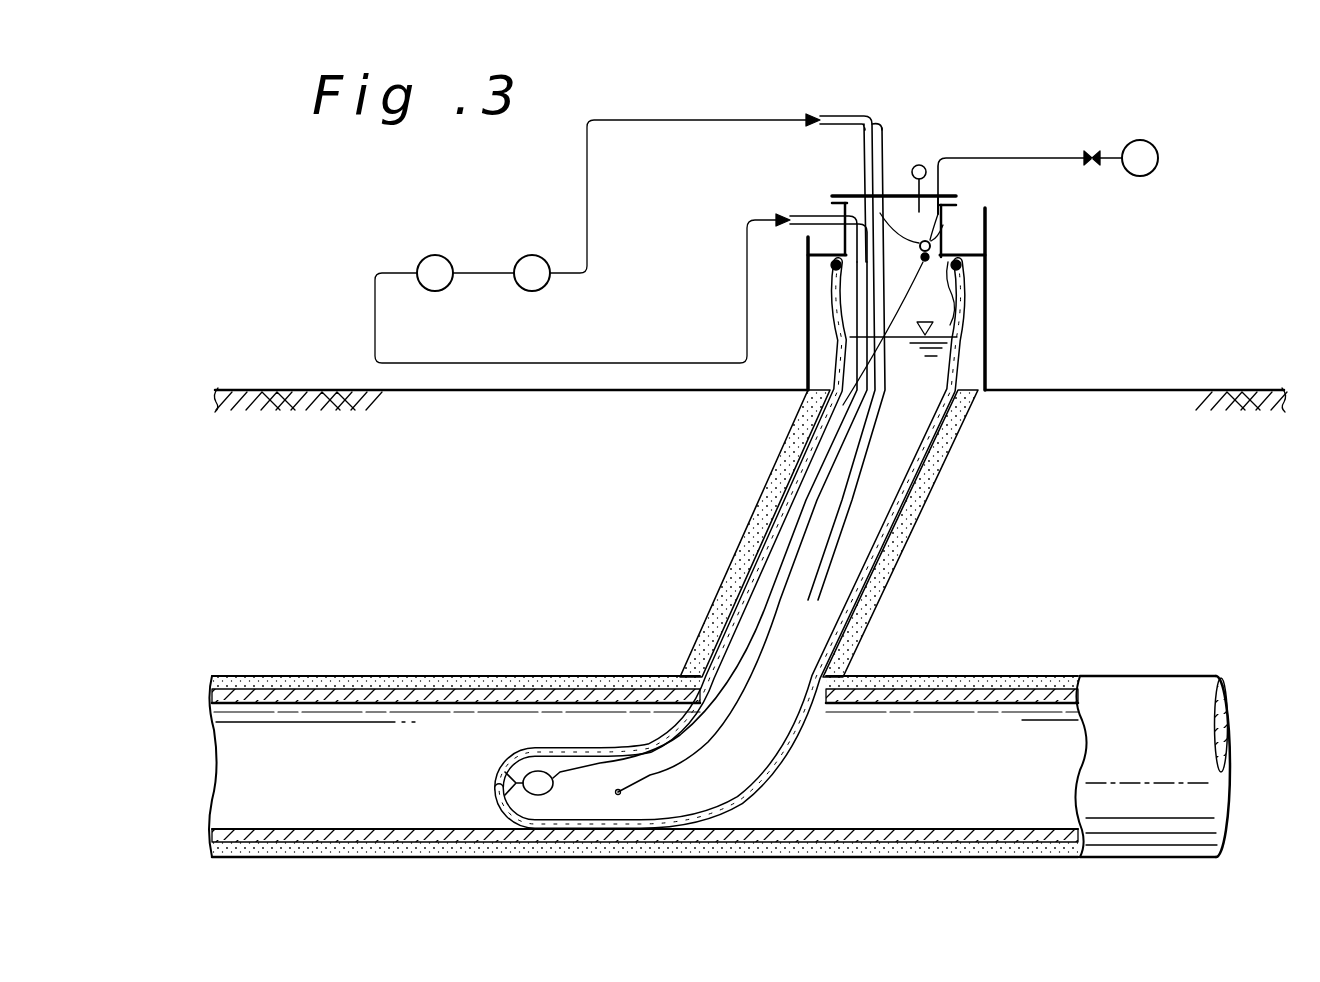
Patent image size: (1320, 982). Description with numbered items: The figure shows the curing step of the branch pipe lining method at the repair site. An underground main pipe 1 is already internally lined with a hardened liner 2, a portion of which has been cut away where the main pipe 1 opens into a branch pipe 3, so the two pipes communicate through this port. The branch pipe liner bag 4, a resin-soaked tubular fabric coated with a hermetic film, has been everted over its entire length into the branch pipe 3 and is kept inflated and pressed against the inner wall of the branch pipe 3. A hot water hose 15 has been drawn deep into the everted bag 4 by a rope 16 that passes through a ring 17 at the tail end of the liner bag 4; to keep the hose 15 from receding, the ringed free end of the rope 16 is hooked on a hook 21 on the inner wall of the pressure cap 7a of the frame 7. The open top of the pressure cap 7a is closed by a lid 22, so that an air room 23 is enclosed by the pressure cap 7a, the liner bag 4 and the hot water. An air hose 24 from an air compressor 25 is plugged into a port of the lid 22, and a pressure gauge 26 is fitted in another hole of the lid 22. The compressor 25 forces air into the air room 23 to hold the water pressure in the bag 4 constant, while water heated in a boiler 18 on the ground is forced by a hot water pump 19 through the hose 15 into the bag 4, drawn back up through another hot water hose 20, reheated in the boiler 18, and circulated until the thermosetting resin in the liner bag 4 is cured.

The main pipe 1 is at (1114, 708).
The liner 2 is at (922, 708).
The branch pipe 3 is at (905, 543).
The branch pipe liner bag 4 is at (752, 778).
The frame 7 is at (988, 345).
The pressure cap 7a is at (950, 232).
The hot water hose 15 is at (806, 628).
The rope 16 is at (748, 640).
The ring 17 is at (500, 770).
The boiler 18 is at (532, 256).
The hot water pump 19 is at (436, 256).
The hot water hose 20 is at (788, 212).
The hook 21 is at (868, 232).
The lid 22 is at (940, 205).
The air room 23 is at (945, 305).
The air hose 24 is at (1020, 158).
The air compressor 25 is at (1158, 158).
The pressure gauge 26 is at (919, 165).